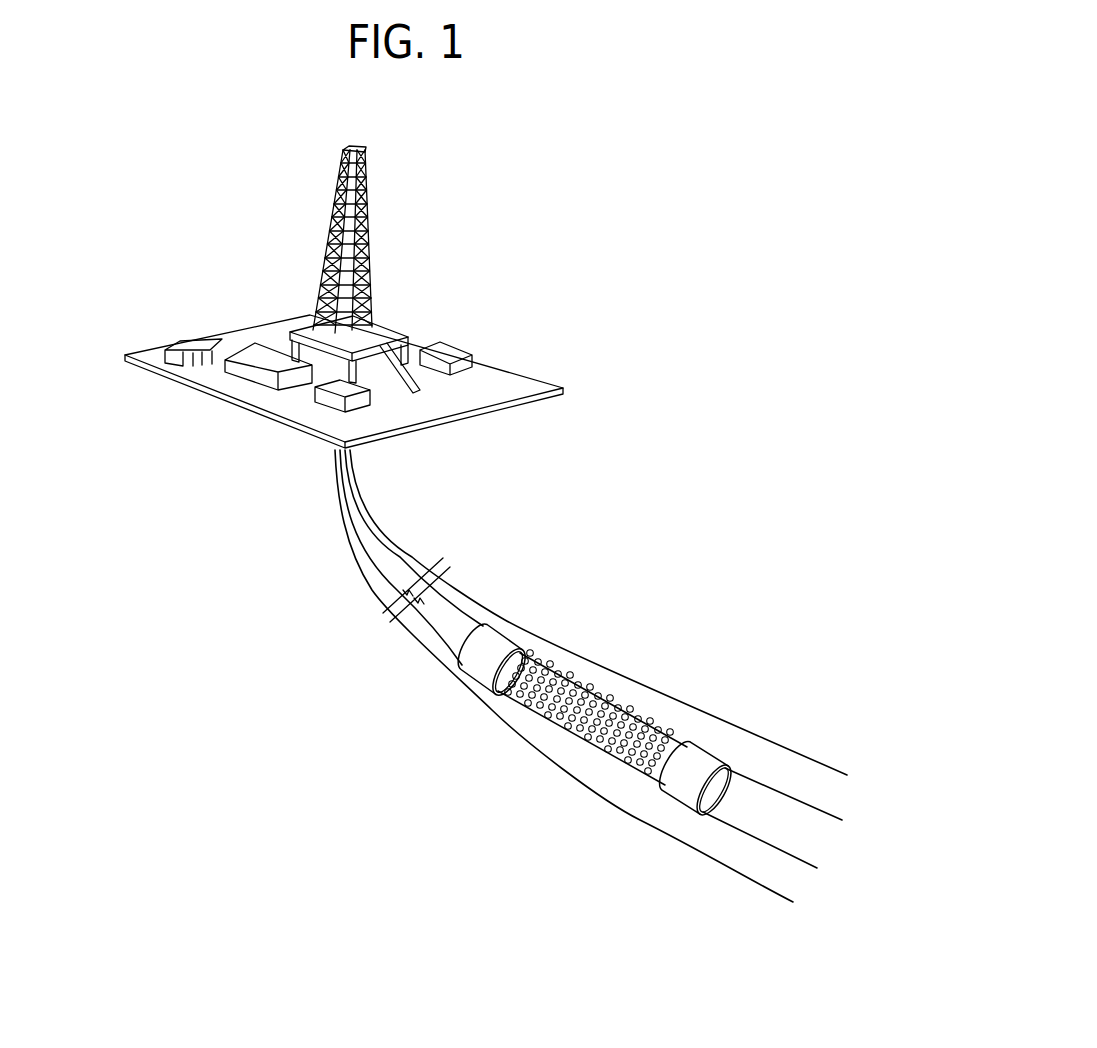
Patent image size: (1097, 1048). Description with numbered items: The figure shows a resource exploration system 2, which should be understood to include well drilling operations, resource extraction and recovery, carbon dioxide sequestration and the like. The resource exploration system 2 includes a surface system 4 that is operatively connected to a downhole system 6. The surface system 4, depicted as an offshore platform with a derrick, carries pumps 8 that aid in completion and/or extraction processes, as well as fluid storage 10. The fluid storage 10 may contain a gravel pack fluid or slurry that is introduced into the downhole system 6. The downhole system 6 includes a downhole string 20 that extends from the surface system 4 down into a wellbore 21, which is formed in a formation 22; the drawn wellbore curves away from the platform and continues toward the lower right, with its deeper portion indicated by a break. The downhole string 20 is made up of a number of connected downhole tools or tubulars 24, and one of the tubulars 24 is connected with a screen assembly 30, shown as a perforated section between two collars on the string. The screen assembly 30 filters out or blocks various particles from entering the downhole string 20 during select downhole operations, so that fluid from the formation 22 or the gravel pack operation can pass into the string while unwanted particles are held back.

The resource exploration system 2 is at (633, 457).
The surface system 4 is at (218, 231).
The downhole system 6 is at (377, 827).
The pumps 8 is at (248, 335).
The fluid storage 10 is at (435, 328).
The downhole string 20 is at (267, 528).
The wellbore 21 is at (405, 555).
The formation 22 is at (300, 681).
The tubulars 24 is at (442, 640).
The screen assembly 30 is at (588, 773).